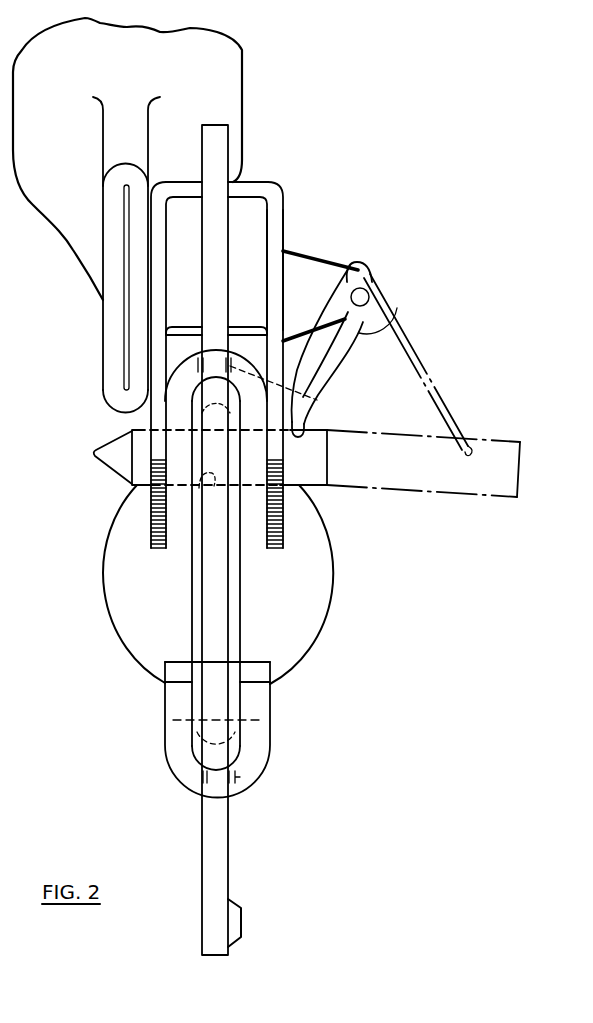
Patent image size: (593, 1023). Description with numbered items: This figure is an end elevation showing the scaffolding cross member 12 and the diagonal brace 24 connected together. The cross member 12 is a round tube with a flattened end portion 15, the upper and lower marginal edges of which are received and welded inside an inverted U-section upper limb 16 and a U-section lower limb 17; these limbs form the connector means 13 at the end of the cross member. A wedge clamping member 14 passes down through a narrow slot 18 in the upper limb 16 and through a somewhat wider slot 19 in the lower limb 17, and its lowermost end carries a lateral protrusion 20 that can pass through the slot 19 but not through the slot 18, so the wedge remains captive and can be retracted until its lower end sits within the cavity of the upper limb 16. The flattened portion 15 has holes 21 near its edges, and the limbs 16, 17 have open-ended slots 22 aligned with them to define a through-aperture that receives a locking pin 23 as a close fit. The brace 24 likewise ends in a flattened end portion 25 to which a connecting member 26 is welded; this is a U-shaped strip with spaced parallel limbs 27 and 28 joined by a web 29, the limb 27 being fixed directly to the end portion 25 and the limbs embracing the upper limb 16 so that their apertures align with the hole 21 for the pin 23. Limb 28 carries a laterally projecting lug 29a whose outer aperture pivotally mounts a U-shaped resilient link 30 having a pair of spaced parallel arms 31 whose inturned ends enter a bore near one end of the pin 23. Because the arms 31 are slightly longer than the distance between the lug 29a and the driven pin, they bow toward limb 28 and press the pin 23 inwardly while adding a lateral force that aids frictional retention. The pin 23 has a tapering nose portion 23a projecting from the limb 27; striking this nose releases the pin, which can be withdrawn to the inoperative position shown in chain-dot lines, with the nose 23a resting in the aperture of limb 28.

The cross member 12 is at (341, 613).
The connector means 13 is at (151, 727).
The wedge clamping member 14 is at (230, 288).
The flattened end portion 15 is at (242, 580).
The upper limb 16 is at (163, 397).
The lower limb 17 is at (165, 748).
The narrow slot 18 is at (286, 390).
The wider slot 19 is at (238, 776).
The lateral protrusion 20 is at (243, 924).
The holes 21 is at (202, 478).
The open ended slots 22 is at (183, 718).
The locking pin 23 is at (324, 482).
The tapering nose portion 23a is at (103, 455).
The diagonal brace 24 is at (256, 105).
The flattened end portion 25 is at (110, 255).
The connecting member 26 is at (248, 182).
The limb 27 is at (157, 228).
The limb 28 is at (278, 240).
The web 29 is at (262, 207).
The lug 29a is at (320, 270).
The resilient link 30 is at (346, 371).
The arms 31 is at (400, 296).